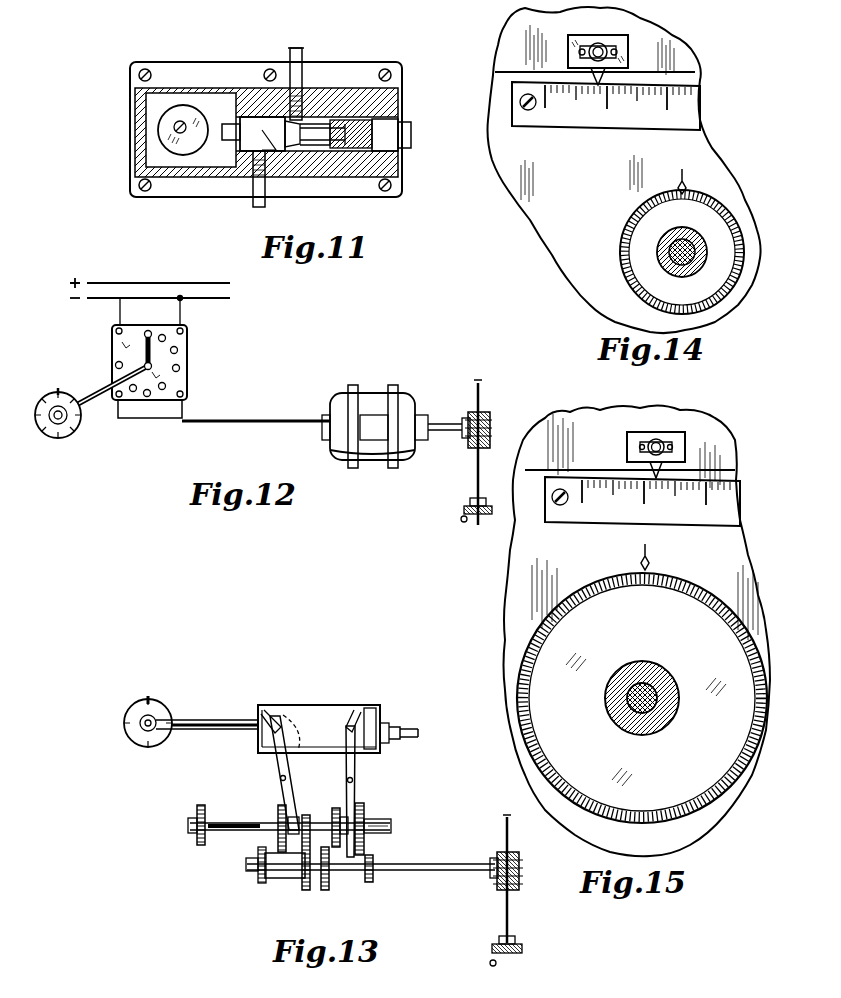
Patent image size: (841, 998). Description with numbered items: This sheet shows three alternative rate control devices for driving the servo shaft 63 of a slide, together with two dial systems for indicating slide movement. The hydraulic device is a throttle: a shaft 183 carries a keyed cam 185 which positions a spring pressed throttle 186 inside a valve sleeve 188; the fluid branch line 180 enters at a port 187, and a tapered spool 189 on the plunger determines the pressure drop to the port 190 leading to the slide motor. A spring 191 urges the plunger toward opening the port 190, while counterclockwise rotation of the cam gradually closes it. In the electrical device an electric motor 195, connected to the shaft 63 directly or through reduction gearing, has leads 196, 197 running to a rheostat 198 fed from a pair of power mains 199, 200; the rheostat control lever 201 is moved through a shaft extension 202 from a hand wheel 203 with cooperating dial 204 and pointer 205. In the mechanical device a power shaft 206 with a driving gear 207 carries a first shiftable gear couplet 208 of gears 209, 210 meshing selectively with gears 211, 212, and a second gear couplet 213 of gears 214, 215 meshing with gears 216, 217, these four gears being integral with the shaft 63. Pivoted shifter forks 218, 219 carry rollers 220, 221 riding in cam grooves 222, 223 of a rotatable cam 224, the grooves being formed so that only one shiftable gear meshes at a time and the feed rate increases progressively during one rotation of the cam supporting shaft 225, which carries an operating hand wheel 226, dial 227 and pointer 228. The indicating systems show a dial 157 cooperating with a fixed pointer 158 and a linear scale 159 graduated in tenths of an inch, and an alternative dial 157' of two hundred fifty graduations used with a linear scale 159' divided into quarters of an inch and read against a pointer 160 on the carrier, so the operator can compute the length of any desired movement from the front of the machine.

In FIG. 12, the shaft 63 is at (456, 424).
In FIG. 13, the shaft 63 is at (452, 870).
In FIG. 14, the dial 157 is at (668, 252).
In FIG. 15, the dial 157' is at (617, 683).
In FIG. 14, the fixed pointer 158 is at (690, 173).
In FIG. 14, the linear scale 159 is at (624, 106).
In FIG. 15, the linear scale 159' is at (611, 514).
In FIG. 14, the index pointer 160 is at (630, 40).
In FIG. 11, the branch line 180 is at (302, 75).
In FIG. 11, the shaft 183 is at (150, 125).
In FIG. 11, the cam 185 is at (187, 118).
In FIG. 11, the spring pressed throttle 186 is at (232, 124).
In FIG. 11, the port 187 is at (296, 117).
In FIG. 11, the valve sleeve 188 is at (385, 110).
In FIG. 11, the tapered spool 189 is at (272, 150).
In FIG. 11, the port 190 is at (252, 165).
In FIG. 11, the spring 191 is at (400, 167).
In FIG. 12, the electric motor 195 is at (372, 400).
In FIG. 12, the lead 196 is at (242, 418).
In FIG. 12, the lead 197 is at (236, 424).
In FIG. 12, the rheostat 198 is at (187, 378).
In FIG. 12, the power main 199 is at (140, 283).
In FIG. 12, the power main 200 is at (108, 303).
In FIG. 12, the rheostat control lever 201 is at (150, 350).
In FIG. 12, the shaft extension 202 is at (97, 410).
In FIG. 12, the hand wheel 203 is at (57, 424).
In FIG. 12, the dial 204 is at (72, 432).
In FIG. 12, the pointer 205 is at (58, 390).
In FIG. 13, the power shaft 206 is at (228, 832).
In FIG. 13, the driving gear 207 is at (200, 846).
In FIG. 13, the first shiftable gear couplet 208 is at (296, 817).
In FIG. 13, the gear 209 is at (278, 808).
In FIG. 13, the gear 210 is at (307, 815).
In FIG. 13, the gear 211 is at (266, 878).
In FIG. 13, the gear 212 is at (306, 892).
In FIG. 13, the second gear couplet 213 is at (337, 850).
In FIG. 13, the gear 214 is at (334, 810).
In FIG. 13, the gear 215 is at (365, 806).
In FIG. 13, the gear 216 is at (324, 890).
In FIG. 13, the gear 217 is at (372, 882).
In FIG. 13, the shifter fork 218 is at (280, 770).
In FIG. 13, the shifter fork 219 is at (356, 768).
In FIG. 13, the roller 220 is at (272, 712).
In FIG. 13, the roller 221 is at (320, 722).
In FIG. 13, the cam groove 222 is at (290, 715).
In FIG. 13, the cam groove 223 is at (359, 712).
In FIG. 13, the rotatable cam 224 is at (370, 712).
In FIG. 13, the cam supporting shaft 225 is at (402, 732).
In FIG. 13, the operating hand wheel 226 is at (140, 723).
In FIG. 13, the dial 227 is at (170, 712).
In FIG. 13, the pointer 228 is at (160, 698).